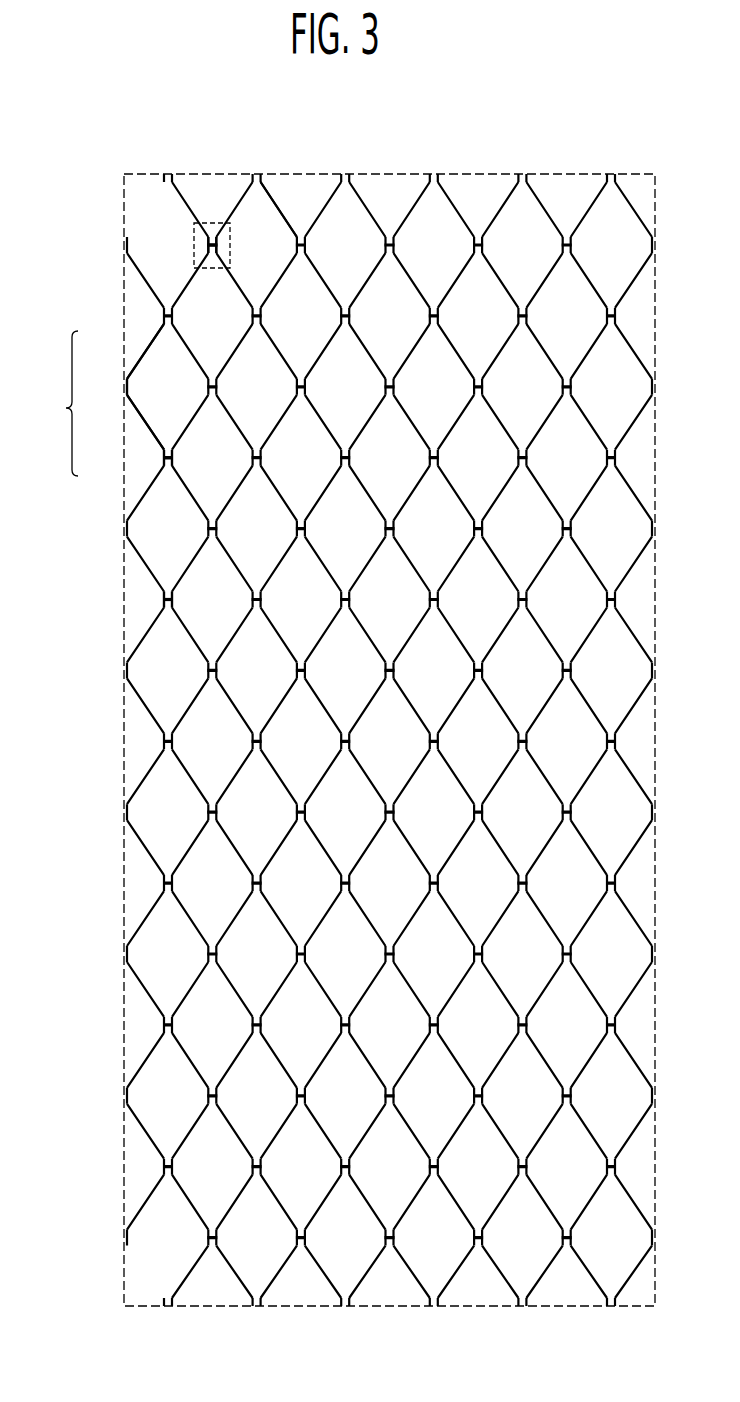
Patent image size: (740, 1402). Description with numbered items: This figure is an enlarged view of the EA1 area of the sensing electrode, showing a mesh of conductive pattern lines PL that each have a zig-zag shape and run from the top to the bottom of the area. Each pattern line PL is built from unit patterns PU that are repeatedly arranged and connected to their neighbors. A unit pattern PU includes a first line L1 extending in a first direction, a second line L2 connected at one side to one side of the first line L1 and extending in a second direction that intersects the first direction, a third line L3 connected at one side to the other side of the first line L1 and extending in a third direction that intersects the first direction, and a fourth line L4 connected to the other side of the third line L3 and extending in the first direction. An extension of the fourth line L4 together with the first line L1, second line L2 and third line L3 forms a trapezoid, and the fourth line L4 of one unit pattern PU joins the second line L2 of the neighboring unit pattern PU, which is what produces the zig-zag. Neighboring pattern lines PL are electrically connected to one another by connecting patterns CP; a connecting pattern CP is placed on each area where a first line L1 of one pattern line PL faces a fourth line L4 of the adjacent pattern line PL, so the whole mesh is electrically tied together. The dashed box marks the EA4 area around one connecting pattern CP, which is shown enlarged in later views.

The EA1 area EA1 is at (392, 166).
The pattern line PL is at (282, 194).
The EA4 area EA4 is at (213, 221).
The unit pattern PU is at (58, 403).
The first line L1 is at (127, 386).
The second line L2 is at (145, 340).
The third line L3 is at (140, 425).
The fourth line L4 is at (163, 458).
The connecting pattern CP is at (164, 593).